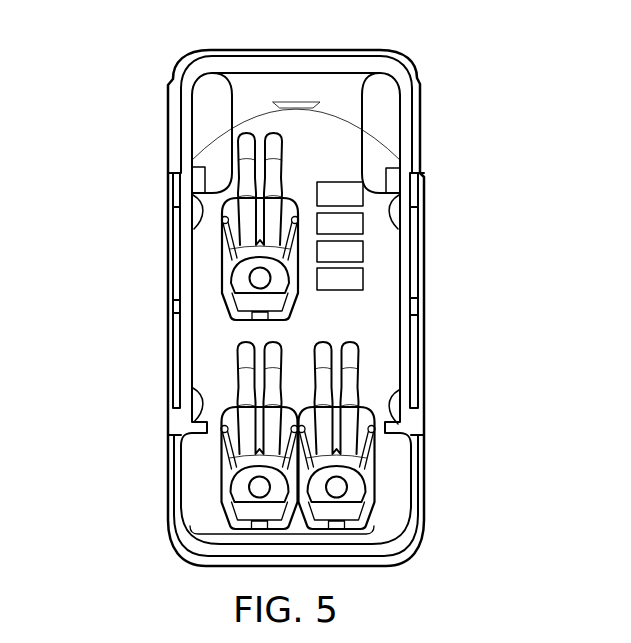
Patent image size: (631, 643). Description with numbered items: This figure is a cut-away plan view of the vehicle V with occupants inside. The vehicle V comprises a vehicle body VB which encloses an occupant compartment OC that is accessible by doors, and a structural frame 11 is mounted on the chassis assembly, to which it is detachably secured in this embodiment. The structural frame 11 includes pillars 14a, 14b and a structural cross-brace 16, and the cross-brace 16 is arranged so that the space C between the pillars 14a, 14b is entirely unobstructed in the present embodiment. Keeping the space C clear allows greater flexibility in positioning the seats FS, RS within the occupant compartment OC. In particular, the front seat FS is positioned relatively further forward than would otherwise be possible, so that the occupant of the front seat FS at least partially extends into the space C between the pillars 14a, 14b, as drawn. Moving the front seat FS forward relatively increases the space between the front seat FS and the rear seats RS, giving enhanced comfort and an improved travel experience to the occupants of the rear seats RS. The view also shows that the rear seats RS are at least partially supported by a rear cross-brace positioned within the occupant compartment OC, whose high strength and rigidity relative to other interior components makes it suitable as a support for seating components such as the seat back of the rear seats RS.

The vehicle V is at (115, 62).
The structural frame 11 is at (456, 60).
The vehicle body VB is at (462, 292).
The structural cross-brace 16 is at (404, 90).
The pillar 14a is at (407, 185).
The pillar 14b is at (170, 177).
The space between the pillars C is at (318, 153).
The occupant compartment OC is at (335, 331).
The front seat FS is at (225, 245).
The rear seats RS is at (225, 438).